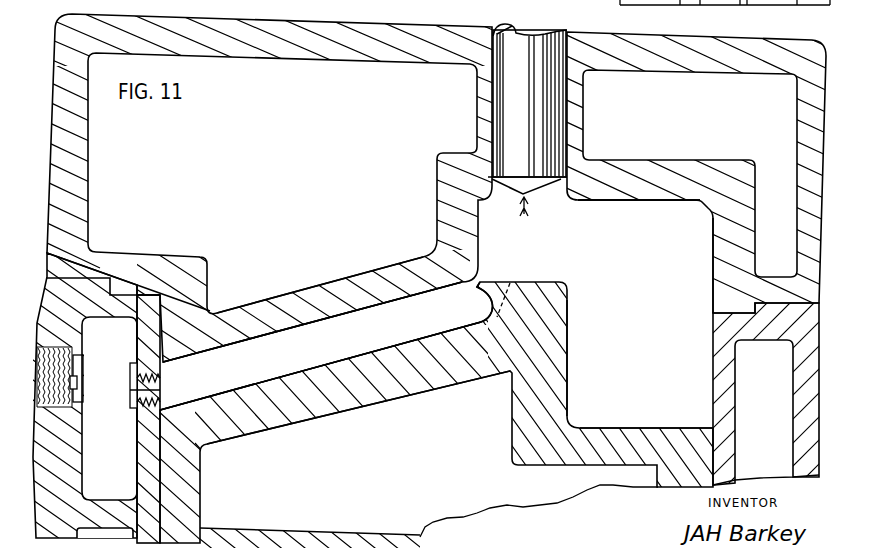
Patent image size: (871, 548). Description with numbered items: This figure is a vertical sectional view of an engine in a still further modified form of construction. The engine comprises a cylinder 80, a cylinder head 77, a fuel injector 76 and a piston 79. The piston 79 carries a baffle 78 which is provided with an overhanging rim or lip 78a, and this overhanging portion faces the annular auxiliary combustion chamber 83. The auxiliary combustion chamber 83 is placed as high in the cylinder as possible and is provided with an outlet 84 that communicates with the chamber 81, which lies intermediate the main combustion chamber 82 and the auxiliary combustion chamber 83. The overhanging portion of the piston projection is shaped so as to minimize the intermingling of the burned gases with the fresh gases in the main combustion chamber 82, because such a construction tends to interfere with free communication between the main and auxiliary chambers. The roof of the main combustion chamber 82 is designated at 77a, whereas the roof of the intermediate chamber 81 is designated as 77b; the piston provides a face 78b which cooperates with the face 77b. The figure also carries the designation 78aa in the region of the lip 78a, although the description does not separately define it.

The fuel injector 76 is at (583, 107).
The cylinder head 77 is at (690, 72).
The roof of the main combustion chamber 77a is at (669, 201).
The roof of the intermediate chamber 77b is at (364, 303).
The baffle 78 is at (535, 281).
The overhanging rim or lip 78a is at (488, 303).
The section line of tip 78aa is at (527, 307).
The piston face 78b is at (367, 342).
The piston 79 is at (628, 419).
The cylinder 80 is at (706, 412).
The chamber 81 is at (320, 346).
The main combustion chamber 82 is at (645, 314).
The annular auxiliary combustion chamber 83 is at (109, 408).
The outlet 84 is at (120, 397).